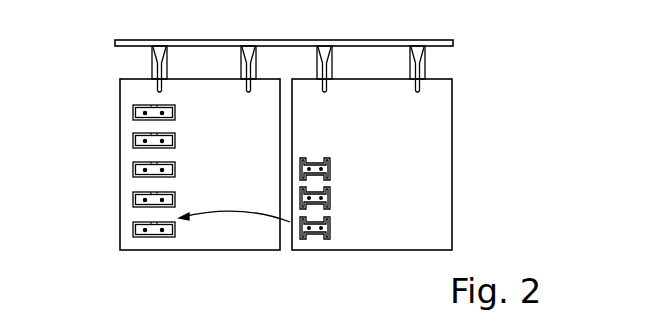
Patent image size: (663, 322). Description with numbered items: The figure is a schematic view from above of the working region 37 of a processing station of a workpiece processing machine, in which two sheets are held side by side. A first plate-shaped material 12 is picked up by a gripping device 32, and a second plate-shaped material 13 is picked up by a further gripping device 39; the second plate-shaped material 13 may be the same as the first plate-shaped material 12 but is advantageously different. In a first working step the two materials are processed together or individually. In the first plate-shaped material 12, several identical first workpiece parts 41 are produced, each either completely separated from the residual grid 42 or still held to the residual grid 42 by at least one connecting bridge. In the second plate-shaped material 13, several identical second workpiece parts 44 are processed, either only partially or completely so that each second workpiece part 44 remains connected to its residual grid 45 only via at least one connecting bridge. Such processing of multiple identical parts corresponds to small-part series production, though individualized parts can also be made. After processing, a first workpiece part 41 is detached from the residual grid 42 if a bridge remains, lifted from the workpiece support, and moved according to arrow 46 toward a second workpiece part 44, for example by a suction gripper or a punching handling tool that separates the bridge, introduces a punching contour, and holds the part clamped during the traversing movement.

The first plate-shaped material 12 is at (452, 183).
The second plate-shaped material 13 is at (119, 187).
The gripping device 32 is at (444, 67).
The working region 37 is at (318, 69).
The further gripping device 39 is at (141, 62).
The first workpiece part 41 is at (315, 233).
The residual grid 42 is at (353, 240).
The second workpiece part 44 is at (144, 238).
The residual grid 45 is at (194, 244).
The arrow 46 is at (240, 214).